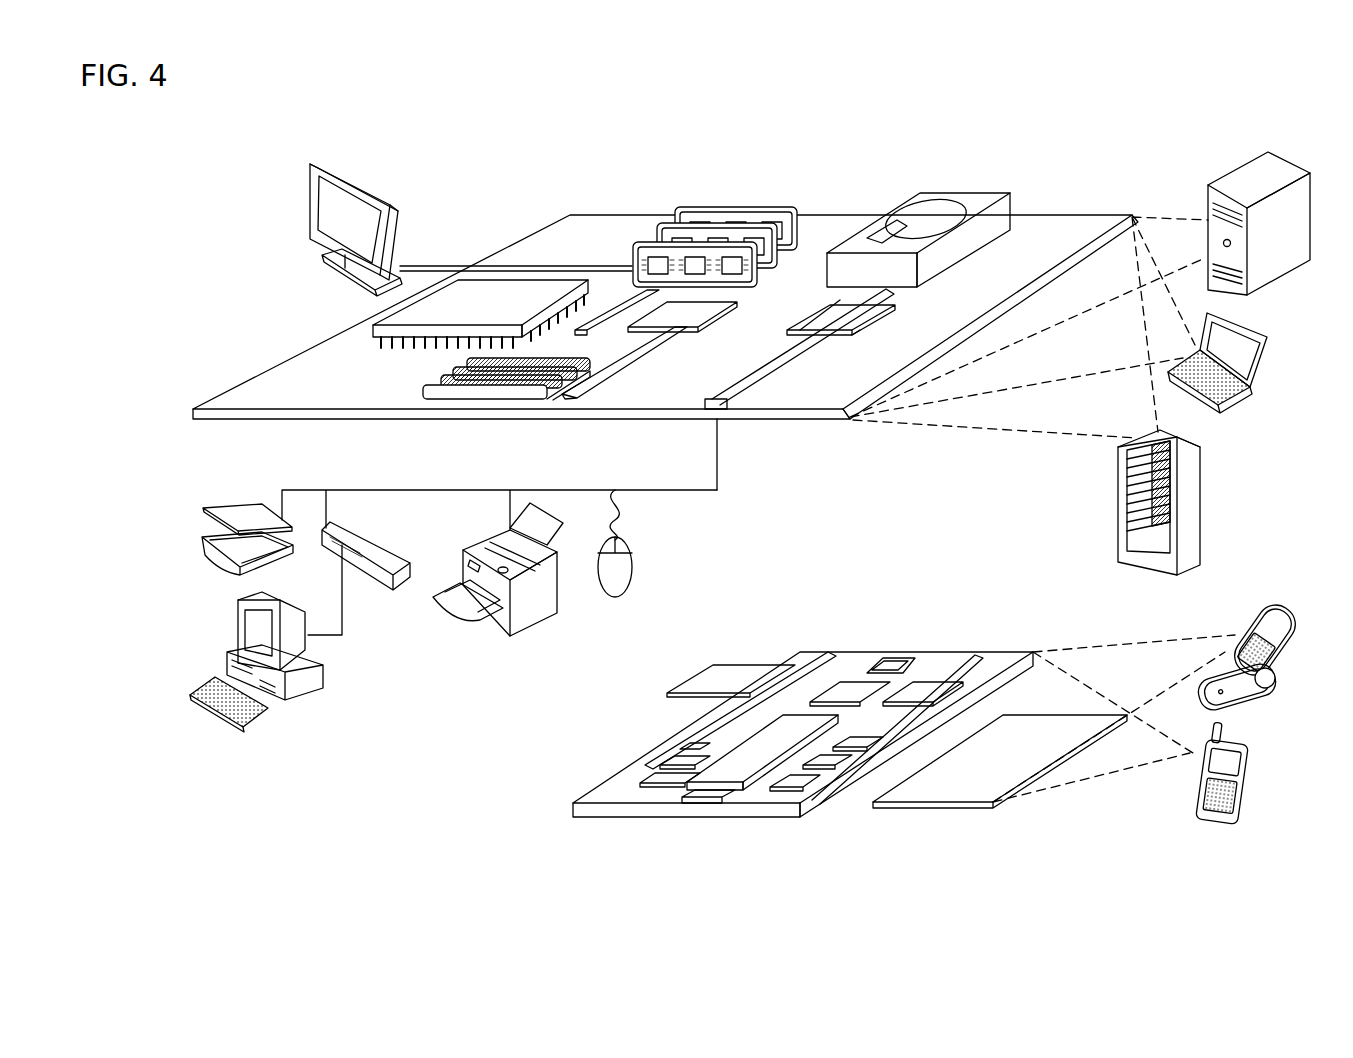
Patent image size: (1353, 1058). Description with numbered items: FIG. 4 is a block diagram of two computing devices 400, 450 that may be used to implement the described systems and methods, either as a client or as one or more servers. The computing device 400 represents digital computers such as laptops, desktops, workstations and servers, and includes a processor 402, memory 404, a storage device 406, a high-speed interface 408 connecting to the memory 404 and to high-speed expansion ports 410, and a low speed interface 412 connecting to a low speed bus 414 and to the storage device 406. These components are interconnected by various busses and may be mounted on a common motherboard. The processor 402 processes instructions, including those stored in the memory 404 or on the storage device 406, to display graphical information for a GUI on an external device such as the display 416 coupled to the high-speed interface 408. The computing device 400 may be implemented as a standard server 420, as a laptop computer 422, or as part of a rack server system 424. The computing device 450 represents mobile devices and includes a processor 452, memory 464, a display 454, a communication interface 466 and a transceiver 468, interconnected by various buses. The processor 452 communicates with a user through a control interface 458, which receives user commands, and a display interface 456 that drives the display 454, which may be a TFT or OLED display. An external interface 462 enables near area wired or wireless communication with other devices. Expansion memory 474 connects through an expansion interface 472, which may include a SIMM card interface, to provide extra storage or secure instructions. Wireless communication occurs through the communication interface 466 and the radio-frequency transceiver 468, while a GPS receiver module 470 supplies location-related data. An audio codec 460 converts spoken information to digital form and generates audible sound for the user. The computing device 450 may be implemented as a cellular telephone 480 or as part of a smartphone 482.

The computing device 400 is at (498, 180).
The processor 402 is at (373, 328).
The memory 404 is at (688, 208).
The storage device 406 is at (905, 193).
The high-speed interface 408 is at (622, 293).
The high-speed expansion ports 410 is at (443, 382).
The low speed interface 412 is at (817, 305).
The low speed bus 414 is at (750, 413).
The display 416 is at (318, 165).
The standard server 420 is at (1208, 203).
The laptop computer 422 is at (1268, 335).
The rack server system 424 is at (1120, 530).
The computing device 450 is at (545, 818).
The processor 452 is at (742, 777).
The display 454 is at (962, 806).
The display interface 456 is at (800, 788).
The control interface 458 is at (835, 768).
The audio codec 460 is at (852, 750).
The external interface 462 is at (707, 803).
The memory 464 is at (660, 775).
The communication interface 466 is at (850, 690).
The transceiver 468 is at (925, 682).
The GPS receiver module 470 is at (893, 660).
The expansion interface 472 is at (782, 662).
The expansion memory 474 is at (705, 668).
The cellular telephone 480 is at (1252, 605).
The smartphone 482 is at (1197, 778).